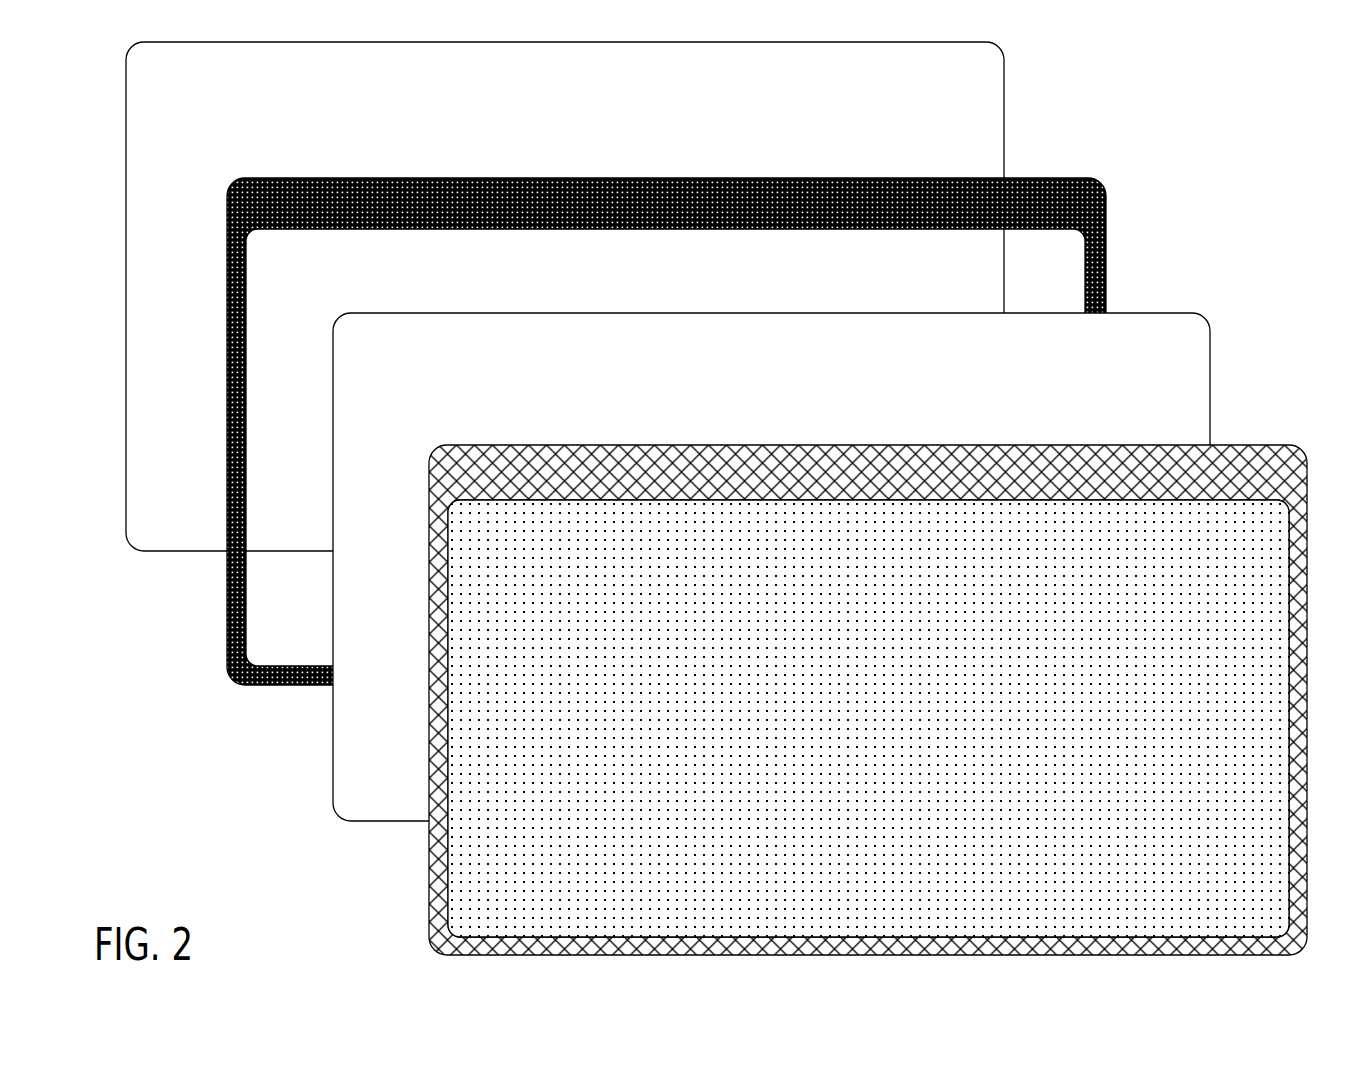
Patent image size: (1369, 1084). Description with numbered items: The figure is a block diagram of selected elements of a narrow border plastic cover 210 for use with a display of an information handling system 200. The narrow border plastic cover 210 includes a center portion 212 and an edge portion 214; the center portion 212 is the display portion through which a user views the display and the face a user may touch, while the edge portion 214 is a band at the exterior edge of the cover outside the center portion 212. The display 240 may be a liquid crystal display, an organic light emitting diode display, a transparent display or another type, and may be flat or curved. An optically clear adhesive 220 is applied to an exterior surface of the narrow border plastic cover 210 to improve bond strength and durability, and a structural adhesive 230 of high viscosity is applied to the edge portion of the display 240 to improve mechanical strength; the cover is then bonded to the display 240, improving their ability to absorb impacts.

The information handling system 200 is at (1180, 104).
The narrow border plastic cover 210 is at (764, 700).
The center portion 212 is at (868, 718).
The edge portion 214 is at (868, 700).
The optically clear adhesive 220 is at (771, 567).
The structural adhesive 230 is at (666, 431).
The display 240 is at (565, 296).